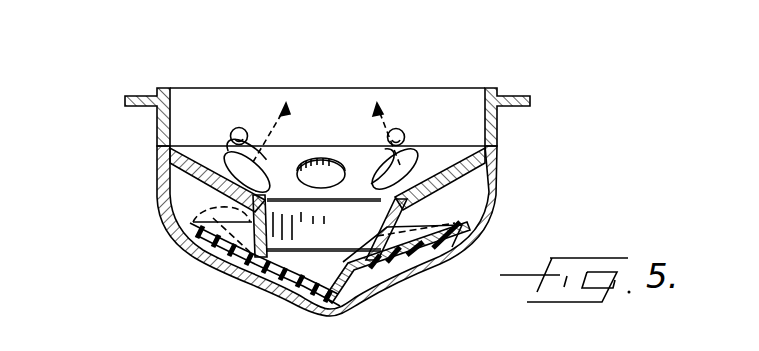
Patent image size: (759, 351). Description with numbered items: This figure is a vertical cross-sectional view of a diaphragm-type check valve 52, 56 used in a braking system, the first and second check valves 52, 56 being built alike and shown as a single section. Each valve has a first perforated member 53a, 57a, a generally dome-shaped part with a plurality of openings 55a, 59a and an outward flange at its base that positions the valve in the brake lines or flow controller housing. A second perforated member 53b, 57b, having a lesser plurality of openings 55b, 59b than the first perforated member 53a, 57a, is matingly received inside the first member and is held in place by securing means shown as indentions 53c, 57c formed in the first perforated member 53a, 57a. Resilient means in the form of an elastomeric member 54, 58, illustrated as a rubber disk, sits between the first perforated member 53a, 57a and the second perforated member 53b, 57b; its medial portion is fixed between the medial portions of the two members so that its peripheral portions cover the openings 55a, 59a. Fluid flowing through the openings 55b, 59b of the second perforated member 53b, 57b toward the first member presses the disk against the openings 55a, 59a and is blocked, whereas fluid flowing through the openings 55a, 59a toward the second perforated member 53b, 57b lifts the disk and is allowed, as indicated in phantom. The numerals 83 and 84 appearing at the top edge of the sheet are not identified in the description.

The first check valve 52 is at (269, 74).
The second check valve 56 is at (84, 71).
The first perforated member 53a is at (382, 231).
The first perforated member 57a is at (497, 204).
The second perforated member 53b is at (327, 183).
The second perforated member 57b is at (446, 125).
The indentions 53c is at (341, 117).
The indentions 57c is at (160, 144).
The elastomeric member 54 is at (245, 240).
The elastomeric member 58 is at (198, 253).
The openings of first perforated member 55a is at (310, 263).
The openings of first perforated member 59a is at (226, 263).
The openings of second perforated member 55b is at (321, 132).
The openings of second perforated member 59b is at (380, 170).
The partially visible numeral 83 is at (615, 6).
The partially visible numeral 84 is at (755, 12).